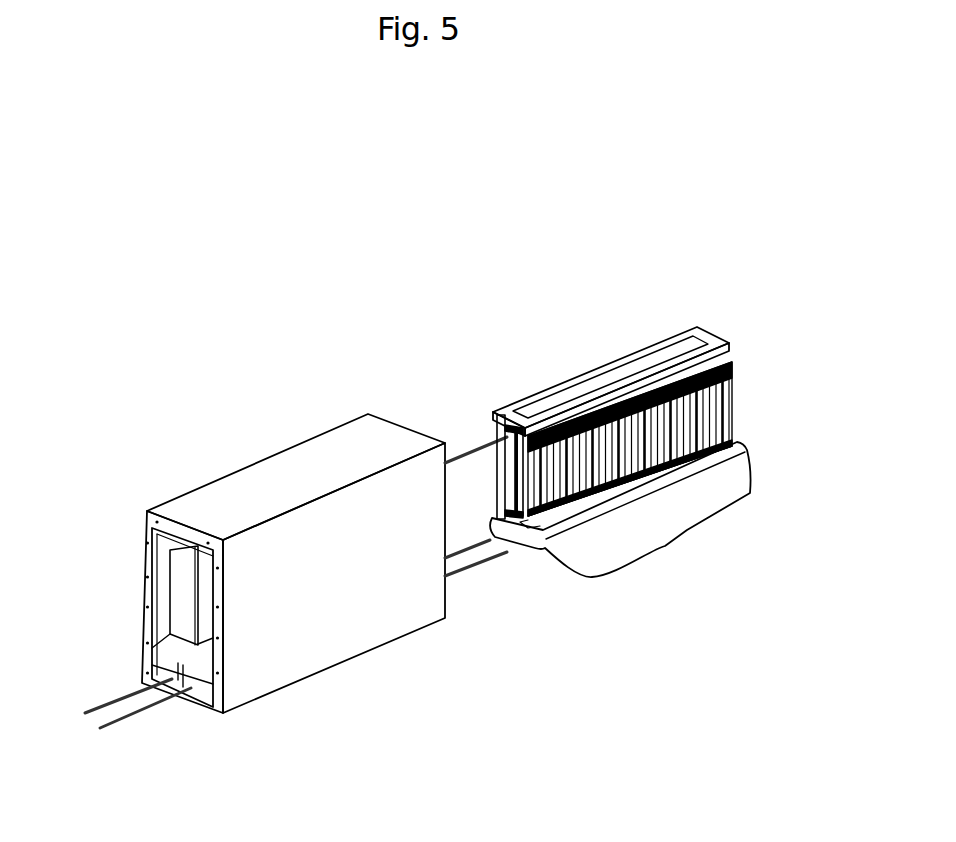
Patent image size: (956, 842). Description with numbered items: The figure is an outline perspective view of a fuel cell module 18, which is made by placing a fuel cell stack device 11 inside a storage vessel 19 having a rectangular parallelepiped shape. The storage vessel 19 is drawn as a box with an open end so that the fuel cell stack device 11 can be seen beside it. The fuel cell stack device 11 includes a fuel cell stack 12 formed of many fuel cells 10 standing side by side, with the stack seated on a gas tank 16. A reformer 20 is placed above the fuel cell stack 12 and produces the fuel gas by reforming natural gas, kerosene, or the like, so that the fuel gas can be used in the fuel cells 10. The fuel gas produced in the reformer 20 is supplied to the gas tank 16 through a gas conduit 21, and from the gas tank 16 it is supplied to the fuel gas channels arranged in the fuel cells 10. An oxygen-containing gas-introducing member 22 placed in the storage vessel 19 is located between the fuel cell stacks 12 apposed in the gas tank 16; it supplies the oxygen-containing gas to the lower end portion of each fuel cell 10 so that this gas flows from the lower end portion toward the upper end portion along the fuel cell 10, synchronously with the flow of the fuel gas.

The fuel cell module 18 is at (244, 211).
The storage vessel 19 is at (295, 460).
The oxygen-containing gas-introducing member 22 is at (208, 580).
The gas conduit 21 is at (500, 433).
The fuel cell 10 is at (733, 352).
The reformer 20 is at (495, 412).
The fuel cell stack device 11 is at (644, 322).
The fuel cell stack 12 is at (687, 530).
The gas tank 16 is at (557, 523).